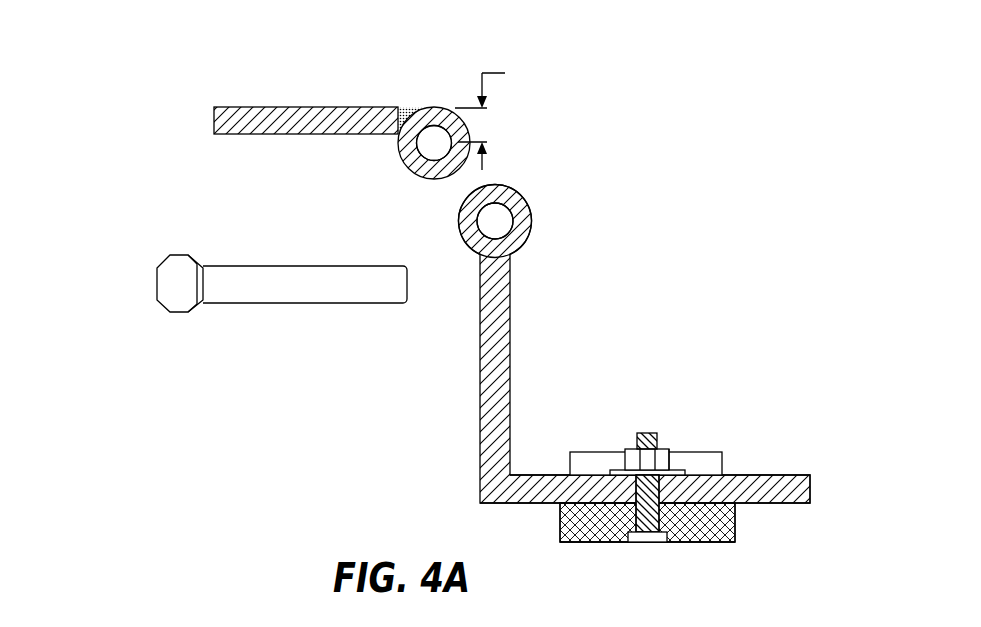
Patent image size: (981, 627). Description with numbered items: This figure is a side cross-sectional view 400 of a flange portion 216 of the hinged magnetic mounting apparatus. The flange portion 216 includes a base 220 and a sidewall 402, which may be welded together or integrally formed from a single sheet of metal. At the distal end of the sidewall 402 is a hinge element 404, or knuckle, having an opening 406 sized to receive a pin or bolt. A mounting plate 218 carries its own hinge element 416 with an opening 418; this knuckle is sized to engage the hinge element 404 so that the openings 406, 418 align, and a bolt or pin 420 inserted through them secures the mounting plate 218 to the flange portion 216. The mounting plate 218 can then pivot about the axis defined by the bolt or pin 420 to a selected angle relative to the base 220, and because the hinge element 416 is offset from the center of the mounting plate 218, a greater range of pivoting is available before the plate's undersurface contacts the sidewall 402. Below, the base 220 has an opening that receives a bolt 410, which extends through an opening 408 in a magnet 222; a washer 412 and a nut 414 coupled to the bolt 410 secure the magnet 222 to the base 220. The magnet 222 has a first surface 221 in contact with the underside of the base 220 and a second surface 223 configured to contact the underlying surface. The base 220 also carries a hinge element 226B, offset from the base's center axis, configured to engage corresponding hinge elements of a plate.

The side cross-sectional view 400 is at (94, 54).
The mounting plate 218 is at (238, 107).
The hinge element 416 is at (445, 107).
The opening 418 is at (418, 142).
The hinge element 404 is at (460, 218).
The opening 406 is at (502, 215).
The flange portion 216 is at (647, 282).
The bolt or pin 420 is at (290, 266).
The sidewall 402 is at (480, 410).
The bolt 410 is at (643, 433).
The nut 414 is at (672, 449).
The washer 412 is at (686, 471).
The hinge element 226B is at (601, 452).
The base 220 is at (777, 475).
The opening 408 is at (636, 527).
The first surface 221 is at (697, 505).
The magnet 222 is at (717, 532).
The second surface 223 is at (593, 543).